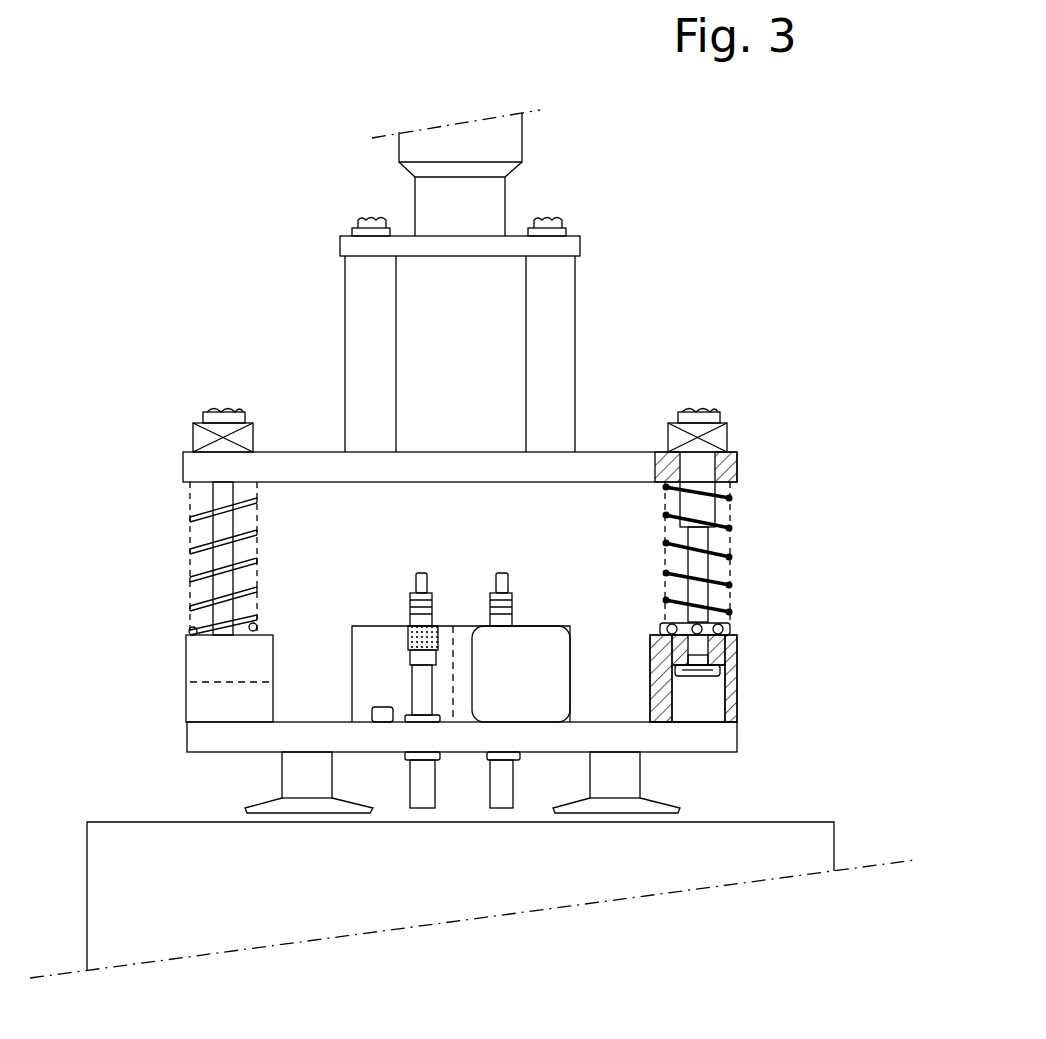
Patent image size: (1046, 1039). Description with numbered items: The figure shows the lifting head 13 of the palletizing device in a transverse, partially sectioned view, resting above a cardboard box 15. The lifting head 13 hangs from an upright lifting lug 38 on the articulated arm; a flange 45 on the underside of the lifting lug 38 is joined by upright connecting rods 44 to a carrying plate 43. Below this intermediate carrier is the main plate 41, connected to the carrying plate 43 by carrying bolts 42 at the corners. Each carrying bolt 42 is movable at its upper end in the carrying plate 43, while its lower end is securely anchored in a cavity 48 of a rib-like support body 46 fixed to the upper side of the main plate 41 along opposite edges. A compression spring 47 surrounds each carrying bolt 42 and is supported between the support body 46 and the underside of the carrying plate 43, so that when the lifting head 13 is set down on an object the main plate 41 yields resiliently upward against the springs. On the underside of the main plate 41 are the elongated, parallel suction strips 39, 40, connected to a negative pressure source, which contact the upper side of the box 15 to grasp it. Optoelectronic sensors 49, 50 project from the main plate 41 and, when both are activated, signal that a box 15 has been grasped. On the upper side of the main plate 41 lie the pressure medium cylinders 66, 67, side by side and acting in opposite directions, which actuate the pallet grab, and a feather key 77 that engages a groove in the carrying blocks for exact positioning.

The lifting head 13 is at (713, 367).
The cardboard box 15 is at (122, 848).
The lifting lug 38 is at (463, 148).
The suction strip 39 is at (302, 800).
The suction strip 40 is at (620, 810).
The main plate 41 is at (708, 737).
The carrying bolt 42 is at (218, 558).
The carrying plate 43 is at (290, 448).
The connecting rod 44 is at (373, 332).
The flange 45 is at (560, 248).
The support body 46 is at (205, 662).
The compression spring 47 is at (195, 517).
The cavity 48 is at (700, 703).
The sensor 49 is at (398, 635).
The sensor 50 is at (517, 603).
The pressure medium cylinder 66 is at (370, 658).
The pressure medium cylinder 67 is at (555, 680).
The feather key 77 is at (380, 715).